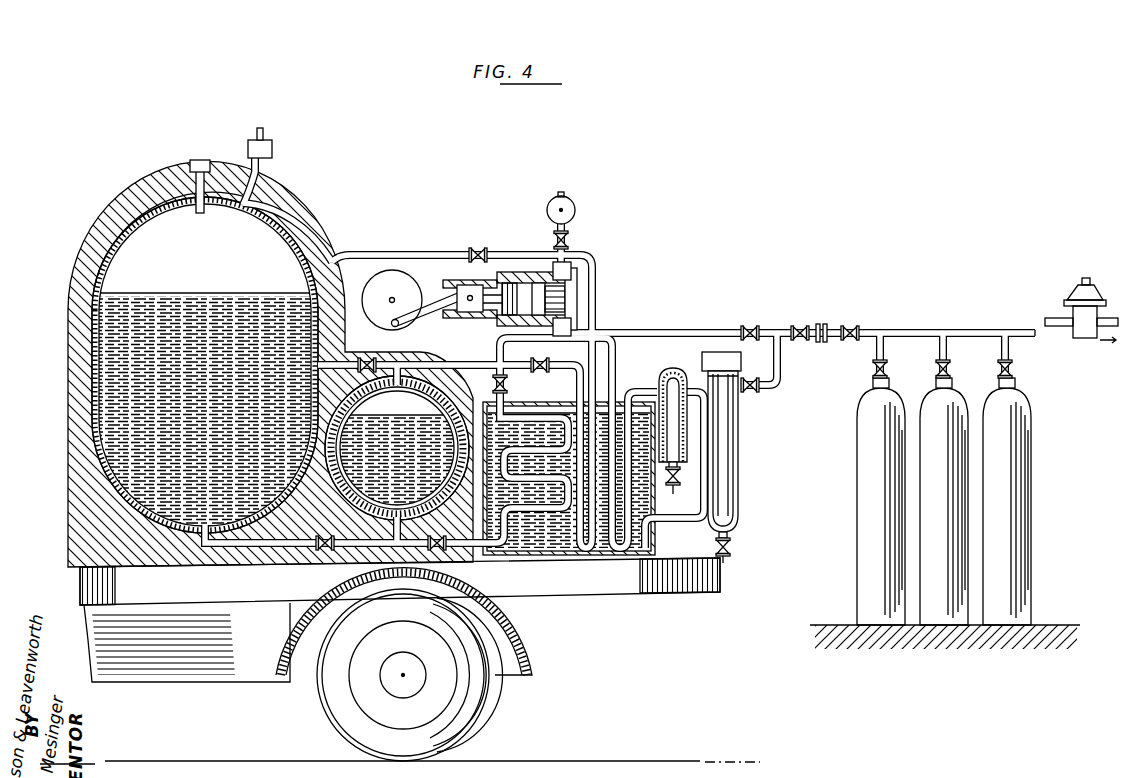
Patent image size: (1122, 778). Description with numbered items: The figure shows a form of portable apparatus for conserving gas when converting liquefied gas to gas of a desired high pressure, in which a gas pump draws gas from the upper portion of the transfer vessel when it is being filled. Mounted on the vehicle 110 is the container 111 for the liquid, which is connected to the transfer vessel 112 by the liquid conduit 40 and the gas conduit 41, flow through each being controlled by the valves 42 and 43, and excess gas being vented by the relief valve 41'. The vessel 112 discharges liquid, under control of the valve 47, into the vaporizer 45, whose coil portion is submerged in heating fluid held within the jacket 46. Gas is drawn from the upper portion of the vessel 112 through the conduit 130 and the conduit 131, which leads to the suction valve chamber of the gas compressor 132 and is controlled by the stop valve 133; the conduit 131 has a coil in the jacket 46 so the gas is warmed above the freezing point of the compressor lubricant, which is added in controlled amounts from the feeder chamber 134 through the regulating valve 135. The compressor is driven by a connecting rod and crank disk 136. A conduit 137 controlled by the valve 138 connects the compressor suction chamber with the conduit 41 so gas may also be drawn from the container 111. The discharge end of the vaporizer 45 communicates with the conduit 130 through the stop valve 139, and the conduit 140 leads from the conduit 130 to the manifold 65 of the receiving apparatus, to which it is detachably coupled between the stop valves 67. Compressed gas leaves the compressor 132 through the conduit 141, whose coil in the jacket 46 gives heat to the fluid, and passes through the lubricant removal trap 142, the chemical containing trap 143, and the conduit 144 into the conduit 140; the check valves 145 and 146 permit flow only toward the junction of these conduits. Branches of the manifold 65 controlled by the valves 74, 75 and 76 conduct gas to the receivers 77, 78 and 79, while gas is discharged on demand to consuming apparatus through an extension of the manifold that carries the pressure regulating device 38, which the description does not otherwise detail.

The vehicle 110 is at (172, 590).
The container 111 is at (100, 278).
The transfer vessel 112 is at (440, 495).
The liquid conduit 40 is at (240, 549).
The gas conduit 41 is at (293, 222).
The relief valve 41' is at (279, 172).
The valve 42 is at (323, 553).
The valve 43 is at (372, 358).
The vaporizer conduit 45 is at (566, 560).
The jacket 46 is at (656, 543).
The valve 47 is at (442, 537).
The conduit 130 is at (462, 362).
The conduit 131 is at (598, 290).
The gas compressor 132 is at (521, 272).
The stop valve 133 is at (540, 372).
The feeder chamber 134 is at (576, 209).
The regulating valve 135 is at (570, 239).
The crank disk 136 is at (395, 288).
The conduit 137 is at (358, 256).
The valve 138 is at (478, 250).
The stop valve 139 is at (490, 384).
The conduit 140 is at (700, 330).
The conduit 141 is at (616, 374).
The lubricant removal trap 142 is at (676, 366).
The chemical containing trap 143 is at (730, 482).
The conduit 144 is at (779, 376).
The check valve 145 is at (752, 326).
The check valve 146 is at (756, 390).
The manifold conduit 65 is at (935, 330).
The stop valves 67 is at (846, 325).
The valve 74 is at (888, 372).
The valve 75 is at (951, 372).
The valve 76 is at (1013, 372).
The receiver 77 is at (858, 503).
The receiver 78 is at (950, 497).
The receiver 79 is at (1013, 499).
The pressure regulator 38 is at (1097, 287).